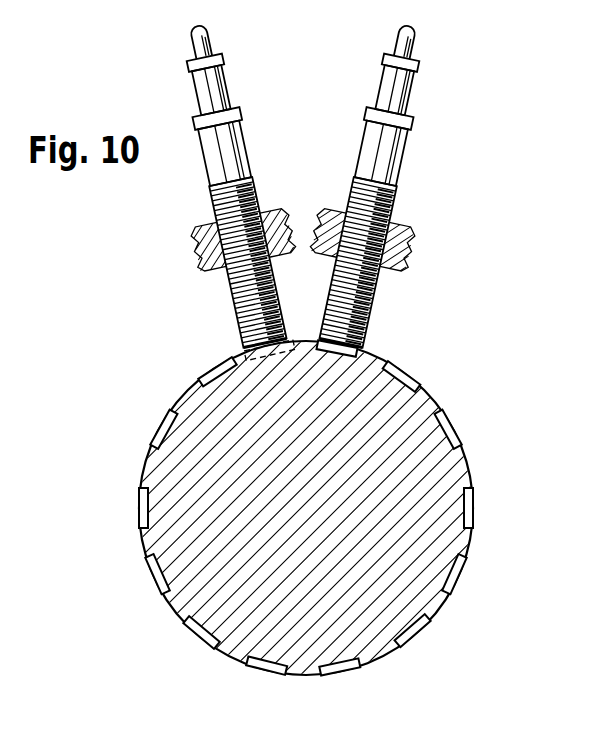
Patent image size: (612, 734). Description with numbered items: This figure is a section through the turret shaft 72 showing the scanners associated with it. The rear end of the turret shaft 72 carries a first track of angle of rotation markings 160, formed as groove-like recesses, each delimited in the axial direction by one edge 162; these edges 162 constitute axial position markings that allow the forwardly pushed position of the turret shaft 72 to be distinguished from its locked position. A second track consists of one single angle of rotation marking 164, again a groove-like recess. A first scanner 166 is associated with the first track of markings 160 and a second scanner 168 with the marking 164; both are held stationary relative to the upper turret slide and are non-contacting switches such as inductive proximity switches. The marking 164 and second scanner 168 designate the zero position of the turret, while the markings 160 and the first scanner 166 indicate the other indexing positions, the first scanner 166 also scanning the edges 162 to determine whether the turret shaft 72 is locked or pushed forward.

The turret shaft 72 is at (453, 472).
The angle of rotation markings 160 is at (152, 437).
The edge 162 is at (200, 372).
The angle of rotation marking 164 is at (243, 345).
The first scanner 166 is at (383, 301).
The second scanner 168 is at (224, 294).